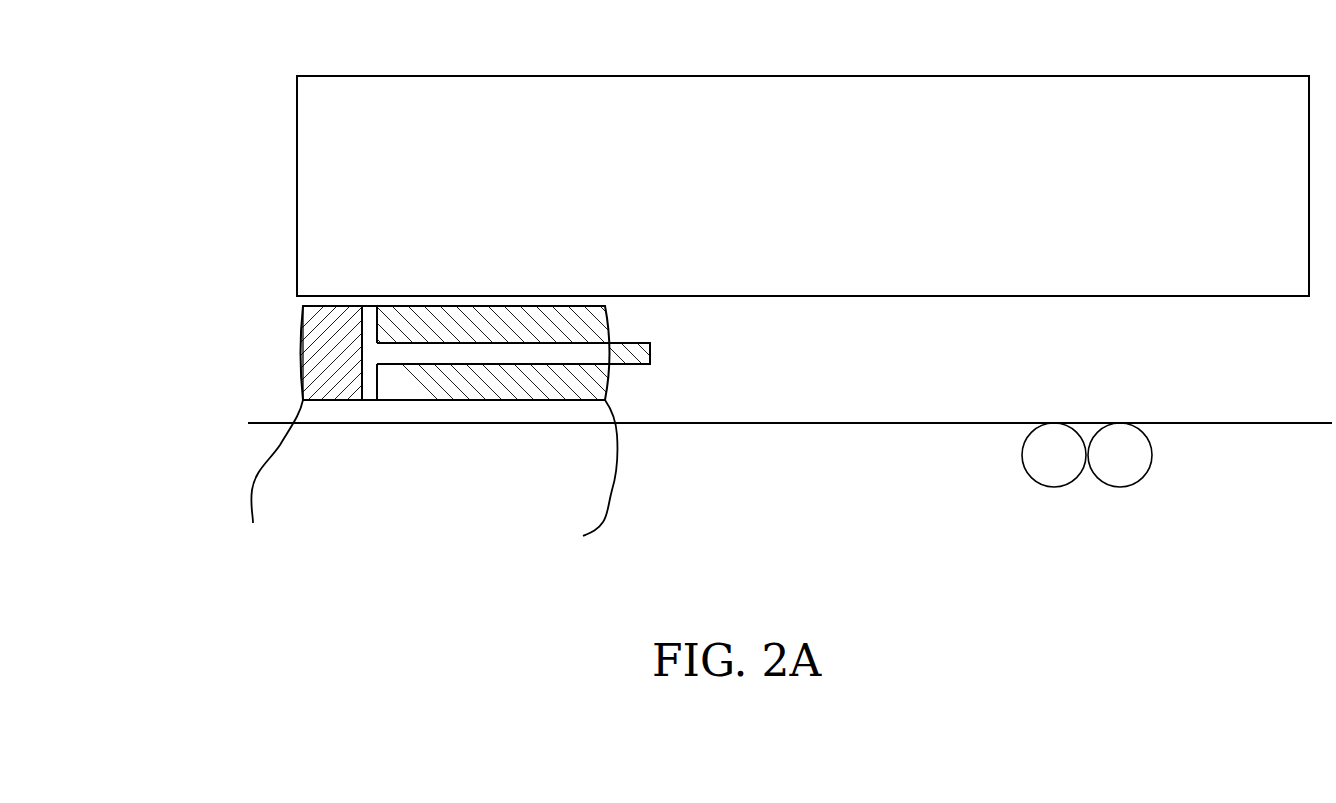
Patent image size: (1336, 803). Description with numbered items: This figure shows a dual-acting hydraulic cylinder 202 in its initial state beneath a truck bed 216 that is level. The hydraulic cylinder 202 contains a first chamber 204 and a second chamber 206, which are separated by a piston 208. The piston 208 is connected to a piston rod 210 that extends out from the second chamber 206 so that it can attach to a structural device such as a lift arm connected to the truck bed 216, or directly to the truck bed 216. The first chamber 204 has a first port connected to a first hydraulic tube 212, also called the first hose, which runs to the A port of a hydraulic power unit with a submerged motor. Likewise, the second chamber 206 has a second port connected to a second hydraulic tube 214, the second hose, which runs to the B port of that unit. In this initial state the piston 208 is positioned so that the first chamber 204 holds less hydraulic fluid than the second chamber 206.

The hydraulic cylinder 202 is at (417, 393).
The first chamber 204 is at (320, 328).
The second chamber 206 is at (597, 326).
The piston 208 is at (369, 389).
The piston rod 210 is at (476, 356).
The first hydraulic tube 212 is at (233, 487).
The second hydraulic tube 214 is at (627, 483).
The truck bed 216 is at (1128, 112).